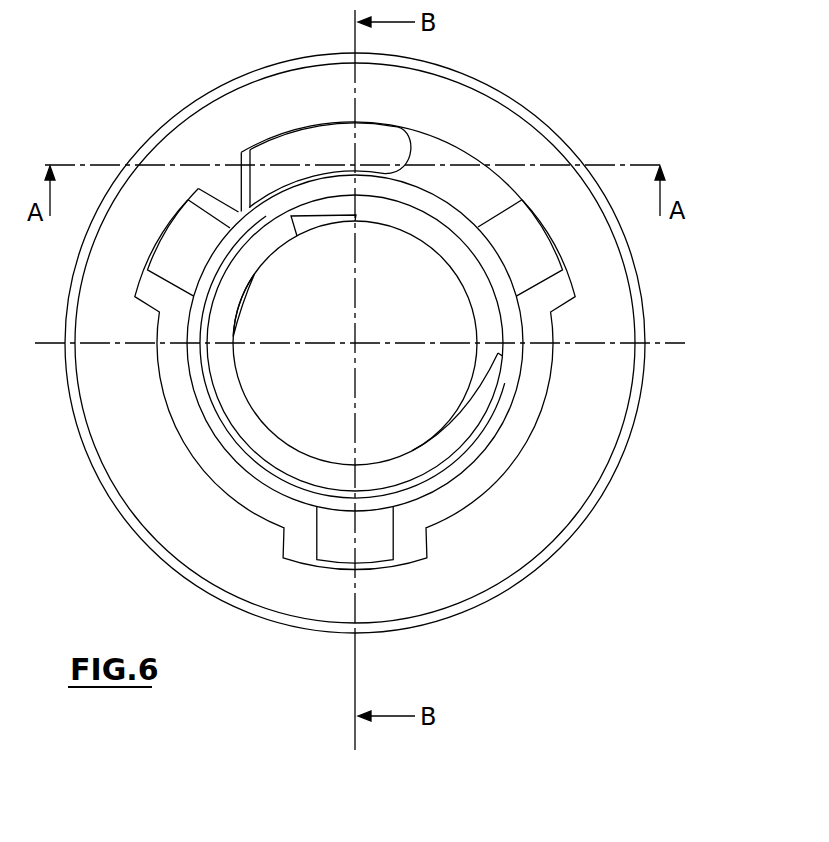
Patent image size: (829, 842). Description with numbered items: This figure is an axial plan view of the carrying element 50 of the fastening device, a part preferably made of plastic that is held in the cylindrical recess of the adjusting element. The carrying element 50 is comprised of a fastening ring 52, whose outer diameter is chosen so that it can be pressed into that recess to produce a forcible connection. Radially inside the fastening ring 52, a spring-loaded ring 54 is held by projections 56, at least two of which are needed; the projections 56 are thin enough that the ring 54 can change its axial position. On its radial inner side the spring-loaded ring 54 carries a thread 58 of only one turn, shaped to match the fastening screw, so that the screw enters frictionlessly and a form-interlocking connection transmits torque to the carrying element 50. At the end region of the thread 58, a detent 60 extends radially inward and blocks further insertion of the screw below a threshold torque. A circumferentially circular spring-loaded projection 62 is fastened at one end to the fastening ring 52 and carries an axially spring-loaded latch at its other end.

The carrying element 50 is at (378, 352).
The fastening ring 52 is at (603, 400).
The spring-loaded ring 54 is at (481, 426).
The projections 56 is at (373, 533).
The thread 58 is at (270, 242).
The detent 60 is at (243, 303).
The spring-loaded projection 62 is at (314, 148).